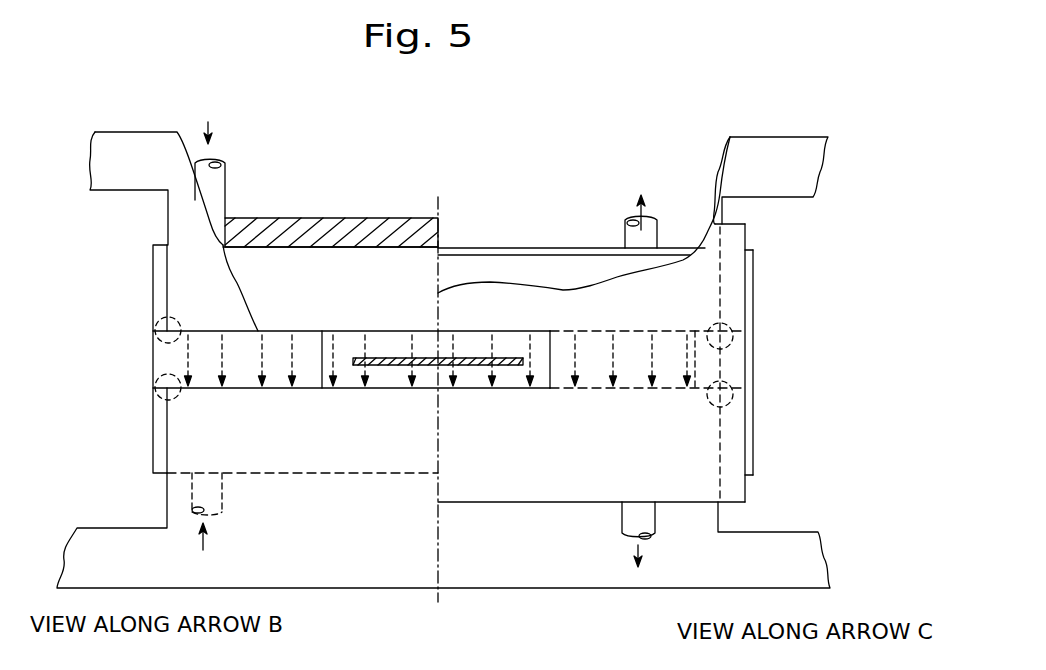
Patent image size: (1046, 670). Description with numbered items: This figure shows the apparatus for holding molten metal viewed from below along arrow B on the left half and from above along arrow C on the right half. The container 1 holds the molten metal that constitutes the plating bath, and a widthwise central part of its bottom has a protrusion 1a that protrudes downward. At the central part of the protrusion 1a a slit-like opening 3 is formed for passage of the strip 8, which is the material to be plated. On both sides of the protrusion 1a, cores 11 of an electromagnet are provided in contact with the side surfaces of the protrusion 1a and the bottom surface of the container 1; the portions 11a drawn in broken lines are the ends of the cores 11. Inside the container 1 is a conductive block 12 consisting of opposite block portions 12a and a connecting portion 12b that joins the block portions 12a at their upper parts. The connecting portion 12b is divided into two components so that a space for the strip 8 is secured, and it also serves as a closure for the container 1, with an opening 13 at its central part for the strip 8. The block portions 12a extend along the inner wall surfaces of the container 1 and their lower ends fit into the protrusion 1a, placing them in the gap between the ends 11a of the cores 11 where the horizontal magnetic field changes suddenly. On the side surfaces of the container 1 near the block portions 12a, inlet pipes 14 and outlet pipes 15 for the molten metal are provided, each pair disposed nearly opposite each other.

The container 1 is at (353, 281).
The protrusion 1a is at (237, 368).
The slit-like opening 3 is at (385, 388).
The strip 8 is at (477, 367).
The cores 11 is at (122, 147).
The ends of the cores 11a is at (160, 323).
The conductive block 12 is at (409, 219).
The block portions 12a is at (727, 363).
The connecting portion 12b is at (320, 232).
The opening 13 is at (548, 388).
The inlet pipes 14 is at (215, 197).
The outlet pipes 15 is at (628, 237).